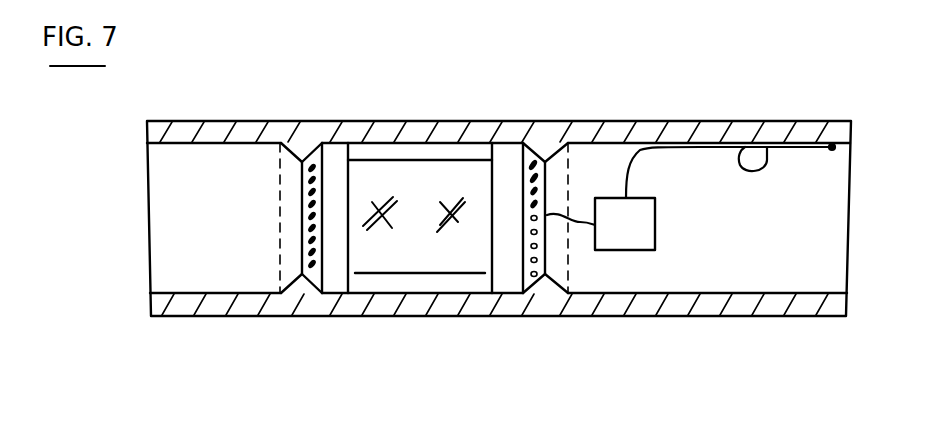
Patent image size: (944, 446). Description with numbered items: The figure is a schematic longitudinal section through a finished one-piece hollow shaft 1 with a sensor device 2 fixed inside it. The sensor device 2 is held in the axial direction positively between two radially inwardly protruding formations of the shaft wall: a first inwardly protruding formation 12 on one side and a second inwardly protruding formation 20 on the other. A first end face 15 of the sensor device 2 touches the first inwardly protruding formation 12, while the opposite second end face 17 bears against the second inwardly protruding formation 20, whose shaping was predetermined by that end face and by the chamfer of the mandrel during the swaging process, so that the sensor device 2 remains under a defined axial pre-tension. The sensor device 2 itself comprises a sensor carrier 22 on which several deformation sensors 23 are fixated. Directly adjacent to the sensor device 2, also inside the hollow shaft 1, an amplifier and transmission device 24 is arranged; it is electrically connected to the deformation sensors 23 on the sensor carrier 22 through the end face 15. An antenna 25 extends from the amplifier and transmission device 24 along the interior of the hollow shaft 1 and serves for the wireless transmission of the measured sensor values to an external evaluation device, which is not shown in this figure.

The hollow shaft 1 is at (683, 95).
The sensor device 2 is at (425, 164).
The first inwardly protruding formation 12 is at (547, 145).
The first end face 15 is at (550, 263).
The second end face 17 is at (301, 260).
The second inwardly protruding formation 20 is at (302, 160).
The sensor carrier 22 is at (410, 255).
The deformation sensors 23 is at (379, 229).
The amplifier and transmission device 24 is at (630, 237).
The antenna 25 is at (767, 147).